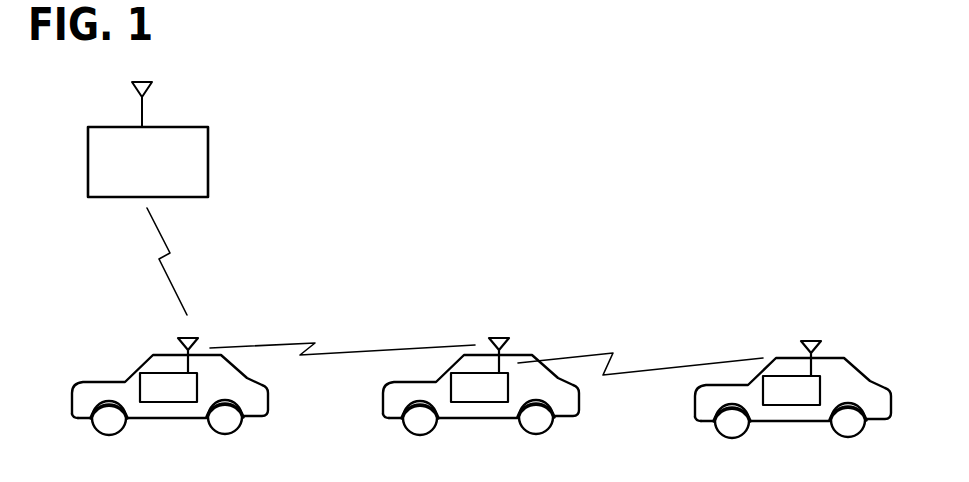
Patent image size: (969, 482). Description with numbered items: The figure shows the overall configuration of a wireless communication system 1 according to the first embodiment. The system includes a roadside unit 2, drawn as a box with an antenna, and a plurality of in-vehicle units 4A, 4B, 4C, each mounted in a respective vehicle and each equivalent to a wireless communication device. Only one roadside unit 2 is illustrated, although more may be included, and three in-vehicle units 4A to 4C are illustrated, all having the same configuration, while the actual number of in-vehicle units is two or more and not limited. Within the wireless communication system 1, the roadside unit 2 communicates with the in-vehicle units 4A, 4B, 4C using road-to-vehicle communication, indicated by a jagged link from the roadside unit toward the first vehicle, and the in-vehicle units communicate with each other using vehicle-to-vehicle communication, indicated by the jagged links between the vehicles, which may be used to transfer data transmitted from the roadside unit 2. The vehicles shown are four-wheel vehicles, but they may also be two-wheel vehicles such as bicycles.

The wireless communication system 1 is at (399, 116).
The roadside unit 2 is at (180, 127).
The in-vehicle unit 4A is at (148, 368).
The in-vehicle unit 4B is at (508, 362).
The in-vehicle unit 4C is at (822, 362).